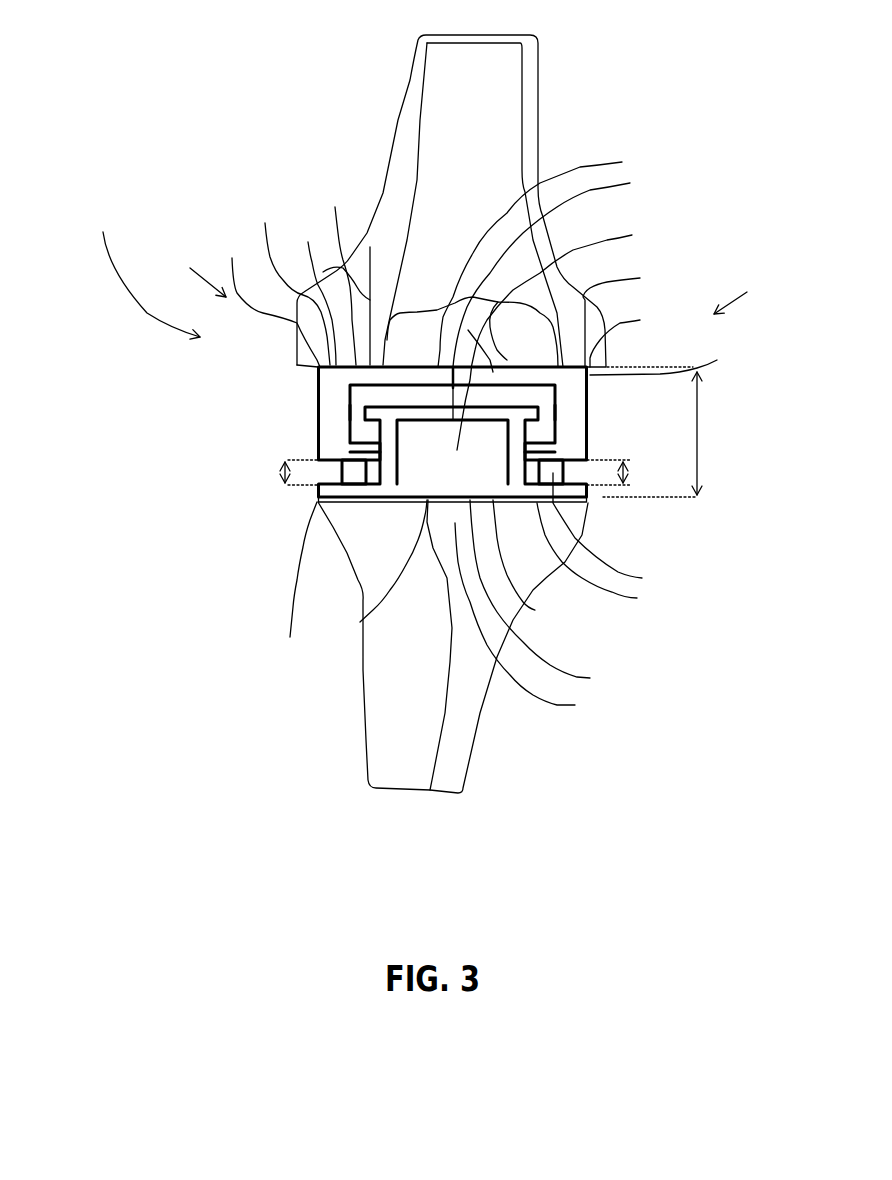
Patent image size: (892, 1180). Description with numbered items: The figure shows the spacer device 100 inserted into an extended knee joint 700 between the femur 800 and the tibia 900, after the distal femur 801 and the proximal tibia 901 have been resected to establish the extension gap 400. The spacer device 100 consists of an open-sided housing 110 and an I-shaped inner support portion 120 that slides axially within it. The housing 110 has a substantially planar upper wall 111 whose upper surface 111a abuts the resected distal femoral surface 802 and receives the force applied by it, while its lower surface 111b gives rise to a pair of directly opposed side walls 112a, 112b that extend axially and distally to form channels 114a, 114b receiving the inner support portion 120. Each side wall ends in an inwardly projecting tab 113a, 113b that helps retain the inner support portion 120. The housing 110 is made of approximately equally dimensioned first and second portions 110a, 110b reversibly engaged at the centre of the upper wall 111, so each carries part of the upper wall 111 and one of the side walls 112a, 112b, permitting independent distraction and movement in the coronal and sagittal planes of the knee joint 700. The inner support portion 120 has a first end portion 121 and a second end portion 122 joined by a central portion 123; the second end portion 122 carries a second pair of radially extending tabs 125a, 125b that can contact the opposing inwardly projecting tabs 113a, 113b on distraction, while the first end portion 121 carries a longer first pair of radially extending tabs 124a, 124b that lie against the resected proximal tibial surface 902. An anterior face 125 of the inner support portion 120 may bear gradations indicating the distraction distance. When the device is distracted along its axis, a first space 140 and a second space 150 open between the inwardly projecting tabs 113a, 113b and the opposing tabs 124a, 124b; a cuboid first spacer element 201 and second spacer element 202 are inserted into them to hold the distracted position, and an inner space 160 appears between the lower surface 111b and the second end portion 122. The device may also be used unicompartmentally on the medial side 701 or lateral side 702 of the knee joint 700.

The spacer device 100 is at (192, 423).
The housing 110 is at (232, 383).
The first portion 110a is at (265, 299).
The second portion 110b is at (676, 357).
The upper wall 111 is at (344, 273).
The upper surface 111a is at (286, 278).
The lower surface 111b is at (311, 288).
The side wall 112a is at (343, 395).
The side wall 112b is at (567, 397).
The inwardly projecting tab 113a is at (345, 452).
The inwardly projecting tab 113b is at (543, 452).
The channel 114a is at (330, 432).
The channel 114b is at (567, 433).
The inner support portion 120 is at (232, 498).
The first end portion 121 is at (360, 622).
The second end portion 122 is at (569, 336).
The central portion 123 is at (537, 319).
The first radially extending tab 124a is at (294, 583).
The first radially extending tab 124b is at (617, 559).
The anterior face 125 is at (535, 610).
The second radially extending tab 125a is at (352, 415).
The second radially extending tab 125b is at (538, 413).
The first space 140 is at (280, 475).
The second space 150 is at (628, 472).
The inner space 160 is at (638, 339).
The first spacer element 201 is at (340, 472).
The second spacer element 202 is at (642, 578).
The extension gap 400 is at (700, 433).
The knee joint 700 is at (143, 268).
The medial side 701 is at (192, 268).
The lateral side 702 is at (750, 290).
The femur 800 is at (487, 86).
The distal femur 801 is at (549, 284).
The resected distal femoral surface 802 is at (561, 270).
The tibia 900 is at (432, 768).
The proximal tibia 901 is at (535, 620).
The resected proximal tibial surface 902 is at (551, 597).